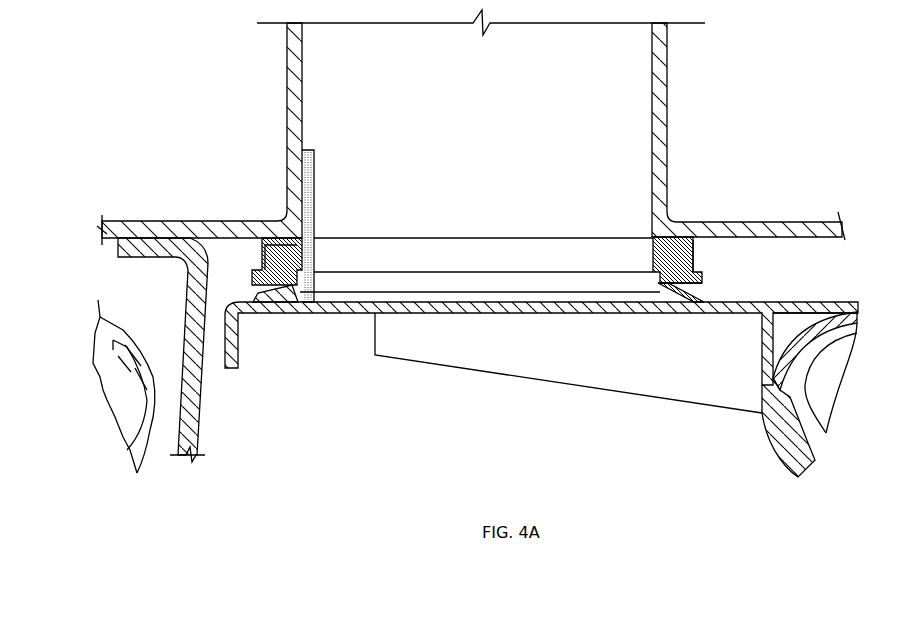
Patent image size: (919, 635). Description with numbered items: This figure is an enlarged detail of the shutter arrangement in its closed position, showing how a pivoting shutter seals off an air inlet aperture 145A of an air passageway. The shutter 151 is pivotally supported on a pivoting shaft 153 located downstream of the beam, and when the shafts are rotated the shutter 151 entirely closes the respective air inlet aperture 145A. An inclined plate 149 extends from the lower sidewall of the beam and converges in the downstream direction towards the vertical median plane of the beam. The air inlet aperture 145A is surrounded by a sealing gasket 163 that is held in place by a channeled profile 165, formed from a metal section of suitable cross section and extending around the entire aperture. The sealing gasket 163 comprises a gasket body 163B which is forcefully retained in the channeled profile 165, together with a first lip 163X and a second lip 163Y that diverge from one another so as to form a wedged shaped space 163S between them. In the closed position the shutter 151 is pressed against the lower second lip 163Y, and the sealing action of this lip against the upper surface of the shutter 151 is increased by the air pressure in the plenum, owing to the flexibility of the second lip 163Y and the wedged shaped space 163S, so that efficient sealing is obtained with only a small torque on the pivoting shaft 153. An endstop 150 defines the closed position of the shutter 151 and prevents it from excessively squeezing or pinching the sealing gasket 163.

The air inlet aperture 145A is at (518, 292).
The inclined plate 149 is at (197, 414).
The endstop 150 is at (322, 249).
The shutter 151 is at (335, 314).
The pivoting shaft 153 is at (856, 337).
The sealing gasket 163 is at (648, 258).
The gasket body 163B is at (696, 228).
The wedged shaped space 163S is at (705, 283).
The first lip 163X is at (698, 277).
The second lip 163Y is at (684, 305).
The channeled profile 165 is at (236, 221).